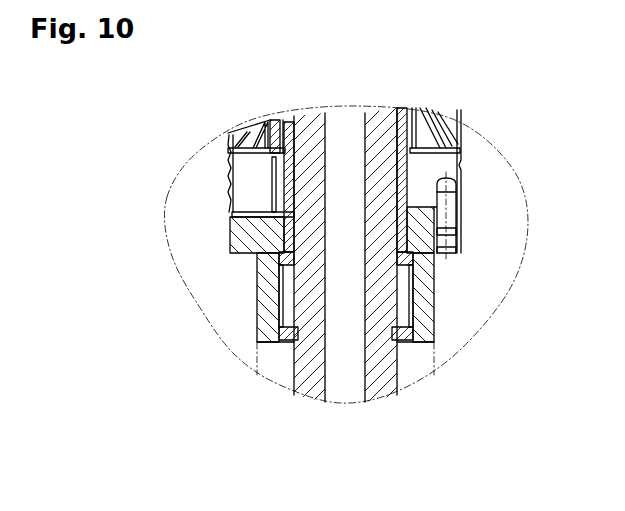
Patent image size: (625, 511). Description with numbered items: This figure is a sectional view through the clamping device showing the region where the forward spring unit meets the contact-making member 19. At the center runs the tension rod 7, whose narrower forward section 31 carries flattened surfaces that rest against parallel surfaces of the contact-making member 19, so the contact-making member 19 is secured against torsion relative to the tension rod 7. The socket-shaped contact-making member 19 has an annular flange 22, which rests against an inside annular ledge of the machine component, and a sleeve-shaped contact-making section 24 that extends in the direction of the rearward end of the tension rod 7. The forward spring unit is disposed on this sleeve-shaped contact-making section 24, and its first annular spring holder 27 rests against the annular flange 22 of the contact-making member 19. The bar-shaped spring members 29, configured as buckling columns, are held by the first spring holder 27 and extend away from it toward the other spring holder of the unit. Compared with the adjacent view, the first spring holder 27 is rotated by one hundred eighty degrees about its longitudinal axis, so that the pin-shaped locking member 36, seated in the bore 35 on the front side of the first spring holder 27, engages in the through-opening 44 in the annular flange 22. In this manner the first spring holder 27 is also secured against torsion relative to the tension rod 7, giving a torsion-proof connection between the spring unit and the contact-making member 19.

The tension rod 7 is at (400, 358).
The contact-making member 19 is at (247, 282).
The annular flange 22 is at (248, 232).
The sleeve-shaped contact-making section 24 is at (283, 123).
The first annular spring holder 27 is at (253, 168).
The spring members 29 is at (427, 132).
The narrower forward section 31 is at (383, 303).
The bore 35 is at (447, 178).
The locking member 36 is at (450, 208).
The through-opening 44 is at (452, 245).